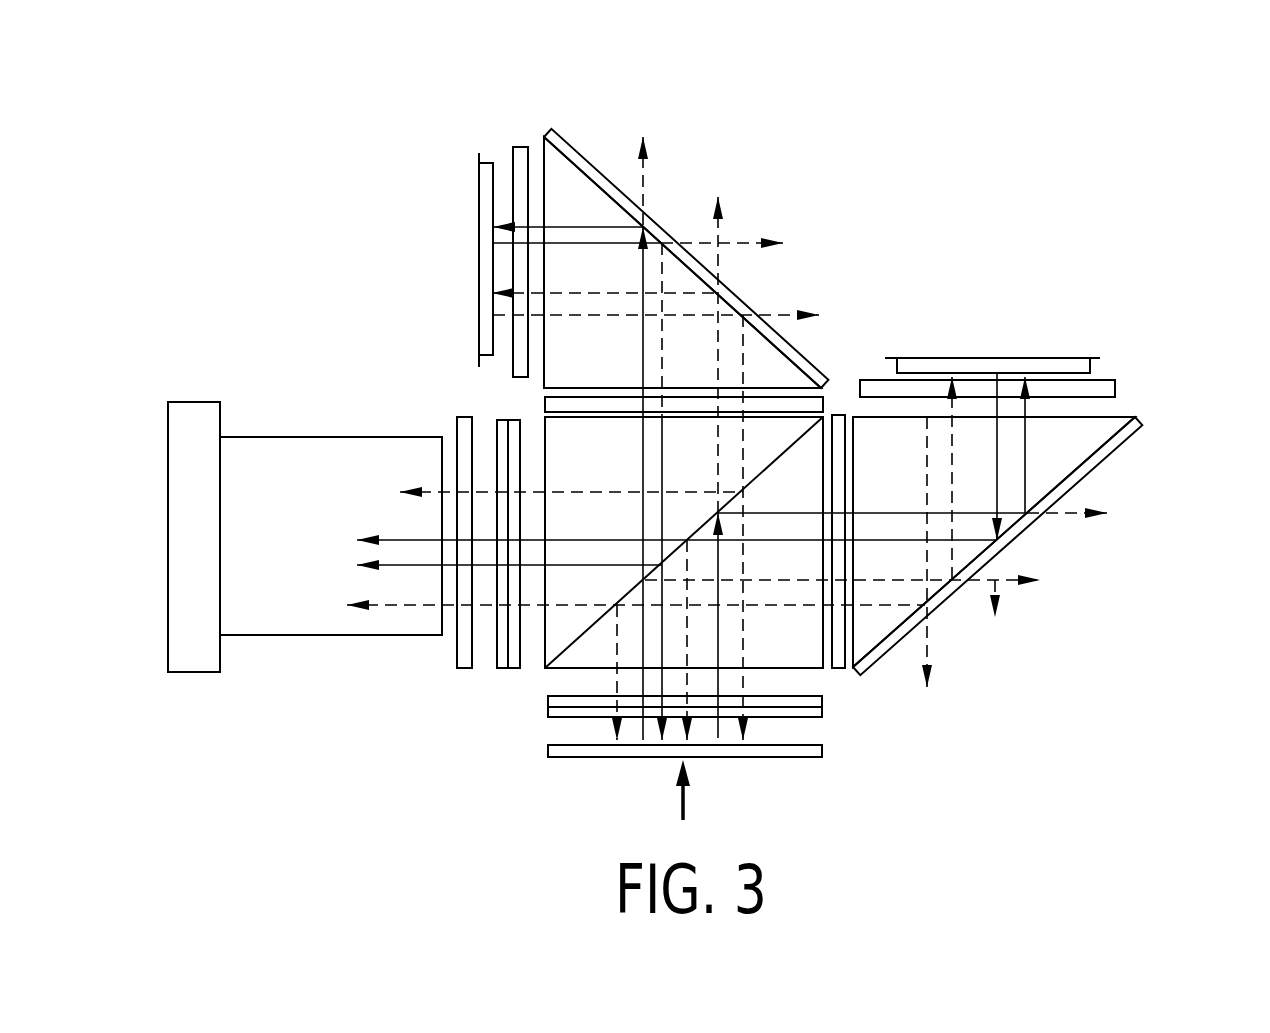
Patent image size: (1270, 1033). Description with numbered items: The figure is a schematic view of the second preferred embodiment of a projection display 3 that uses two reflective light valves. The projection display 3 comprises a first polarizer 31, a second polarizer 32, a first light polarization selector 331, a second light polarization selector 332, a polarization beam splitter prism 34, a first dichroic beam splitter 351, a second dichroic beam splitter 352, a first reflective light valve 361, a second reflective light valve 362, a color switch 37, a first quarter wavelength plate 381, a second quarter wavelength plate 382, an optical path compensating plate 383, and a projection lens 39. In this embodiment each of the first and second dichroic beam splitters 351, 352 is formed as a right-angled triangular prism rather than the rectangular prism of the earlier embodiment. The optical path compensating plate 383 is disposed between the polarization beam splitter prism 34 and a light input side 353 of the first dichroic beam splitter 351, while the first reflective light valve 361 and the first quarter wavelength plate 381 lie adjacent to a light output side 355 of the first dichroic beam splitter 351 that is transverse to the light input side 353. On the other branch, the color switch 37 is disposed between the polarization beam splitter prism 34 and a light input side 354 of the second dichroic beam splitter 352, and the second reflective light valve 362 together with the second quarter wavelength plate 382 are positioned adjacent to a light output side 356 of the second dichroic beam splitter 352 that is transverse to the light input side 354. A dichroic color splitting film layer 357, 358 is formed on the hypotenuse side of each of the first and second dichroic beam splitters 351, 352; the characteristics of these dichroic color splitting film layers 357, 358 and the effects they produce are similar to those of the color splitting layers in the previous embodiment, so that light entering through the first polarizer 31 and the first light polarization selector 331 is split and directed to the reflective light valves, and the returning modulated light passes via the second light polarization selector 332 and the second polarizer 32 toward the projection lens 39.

The projection display 3 is at (1080, 296).
The first polarizer 31 is at (782, 747).
The second polarizer 32 is at (465, 445).
The first light polarization selector 331 is at (805, 708).
The second light polarization selector 332 is at (503, 428).
The polarization beam splitter prism 34 is at (807, 650).
The first dichroic beam splitter 351 is at (1045, 555).
The second dichroic beam splitter 352 is at (680, 205).
The light input side 353 is at (853, 616).
The light input side 354 is at (807, 400).
The light output side 355 is at (1043, 417).
The light output side 356 is at (563, 207).
The dichroic color splitting film layer 357 is at (1020, 527).
The dichroic color splitting film layer 358 is at (605, 183).
The first reflective light valve 361 is at (1017, 360).
The second reflective light valve 362 is at (490, 182).
The color switch 37 is at (838, 423).
The first quarter wavelength plate 381 is at (1105, 387).
The second quarter wavelength plate 382 is at (522, 157).
The optical path compensating plate 383 is at (842, 395).
The projection lens 39 is at (327, 472).